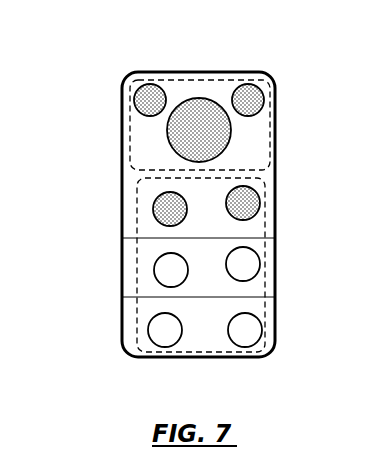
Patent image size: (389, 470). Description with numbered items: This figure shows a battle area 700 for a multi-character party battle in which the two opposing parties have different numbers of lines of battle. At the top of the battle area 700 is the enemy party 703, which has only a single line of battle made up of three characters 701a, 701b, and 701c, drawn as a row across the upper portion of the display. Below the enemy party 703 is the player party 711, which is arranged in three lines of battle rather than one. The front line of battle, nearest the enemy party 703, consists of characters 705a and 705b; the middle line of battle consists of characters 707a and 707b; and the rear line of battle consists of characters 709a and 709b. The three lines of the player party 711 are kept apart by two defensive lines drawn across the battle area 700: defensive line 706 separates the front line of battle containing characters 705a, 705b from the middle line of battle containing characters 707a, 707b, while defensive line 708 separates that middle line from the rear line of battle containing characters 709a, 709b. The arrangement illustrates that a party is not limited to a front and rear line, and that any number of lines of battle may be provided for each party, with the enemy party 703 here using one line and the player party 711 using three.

The battle area 700 is at (122, 330).
The enemy party 703 is at (122, 83).
The player party 711 is at (133, 315).
The defensive line 706 is at (275, 238).
The defensive line 708 is at (275, 297).
The character 701a is at (134, 100).
The character 701b is at (200, 98).
The character 701c is at (264, 100).
The character 705a is at (153, 209).
The character 705b is at (260, 203).
The character 707a is at (154, 270).
The character 707b is at (260, 264).
The character 709a is at (178, 343).
The character 709b is at (257, 342).